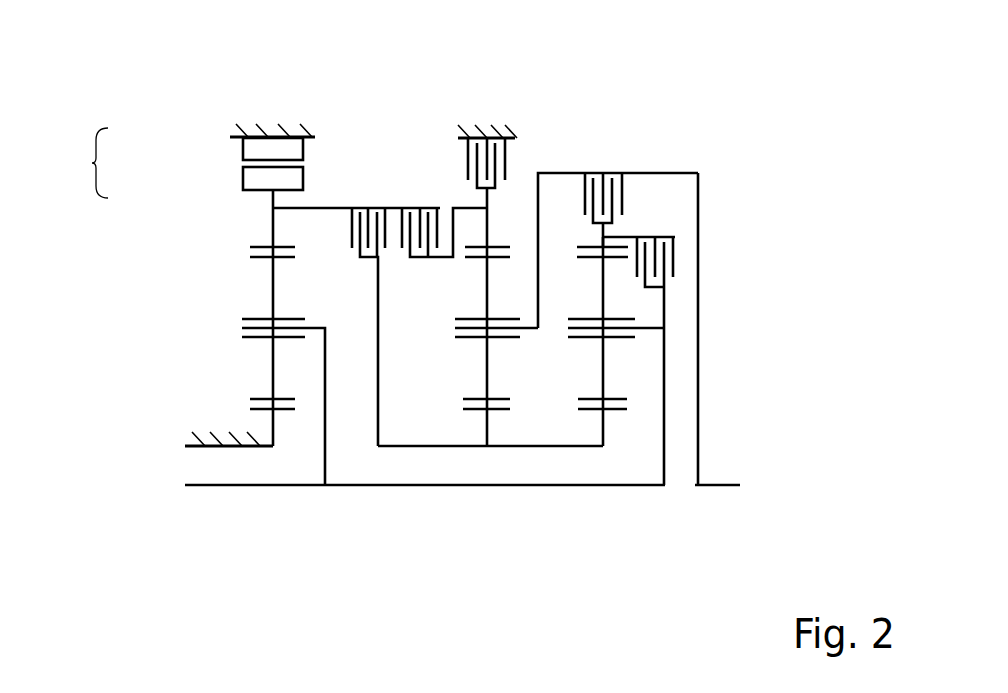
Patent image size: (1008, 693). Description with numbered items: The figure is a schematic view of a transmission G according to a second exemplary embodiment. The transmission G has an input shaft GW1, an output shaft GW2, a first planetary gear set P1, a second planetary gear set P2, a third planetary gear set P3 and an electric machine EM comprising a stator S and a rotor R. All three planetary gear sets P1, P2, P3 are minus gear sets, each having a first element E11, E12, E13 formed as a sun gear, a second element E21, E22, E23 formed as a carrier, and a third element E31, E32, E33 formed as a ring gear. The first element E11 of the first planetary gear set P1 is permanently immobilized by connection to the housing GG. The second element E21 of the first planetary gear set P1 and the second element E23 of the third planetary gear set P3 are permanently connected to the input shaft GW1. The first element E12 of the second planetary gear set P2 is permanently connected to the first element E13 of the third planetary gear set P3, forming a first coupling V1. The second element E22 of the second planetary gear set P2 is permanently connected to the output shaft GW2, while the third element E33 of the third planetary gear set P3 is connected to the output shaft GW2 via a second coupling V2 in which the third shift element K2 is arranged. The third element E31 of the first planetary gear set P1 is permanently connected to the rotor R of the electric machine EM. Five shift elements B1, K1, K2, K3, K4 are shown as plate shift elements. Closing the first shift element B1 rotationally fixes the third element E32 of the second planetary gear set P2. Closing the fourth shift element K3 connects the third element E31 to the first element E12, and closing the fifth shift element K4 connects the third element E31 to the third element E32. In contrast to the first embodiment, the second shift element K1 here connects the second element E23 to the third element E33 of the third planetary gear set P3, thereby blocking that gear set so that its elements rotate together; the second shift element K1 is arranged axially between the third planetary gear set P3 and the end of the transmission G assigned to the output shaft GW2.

The electric machine EM is at (176, 161).
The stator S is at (236, 150).
The rotor R is at (236, 178).
The transmission G is at (737, 176).
The housing GG is at (206, 436).
The input shaft GW1 is at (229, 488).
The output shaft GW2 is at (717, 488).
The first planetary gear set P1 is at (273, 491).
The second planetary gear set P2 is at (487, 491).
The third planetary gear set P3 is at (603, 491).
The first element of the first planetary gear set E11 is at (291, 413).
The second element of the first planetary gear set E21 is at (314, 332).
The third element of the first planetary gear set E31 is at (265, 245).
The first element of the second planetary gear set E12 is at (470, 414).
The second element of the second planetary gear set E22 is at (531, 338).
The third element of the second planetary gear set E32 is at (508, 238).
The first element of the third planetary gear set E13 is at (621, 414).
The second element of the third planetary gear set E23 is at (646, 324).
The third element of the third planetary gear set E33 is at (585, 242).
The second shift element K1 is at (664, 231).
The third shift element K2 is at (606, 171).
The fourth shift element K3 is at (363, 198).
The fifth shift element K4 is at (418, 200).
The first shift element B1 is at (462, 160).
The first coupling V1 is at (573, 449).
The second coupling V2 is at (608, 229).